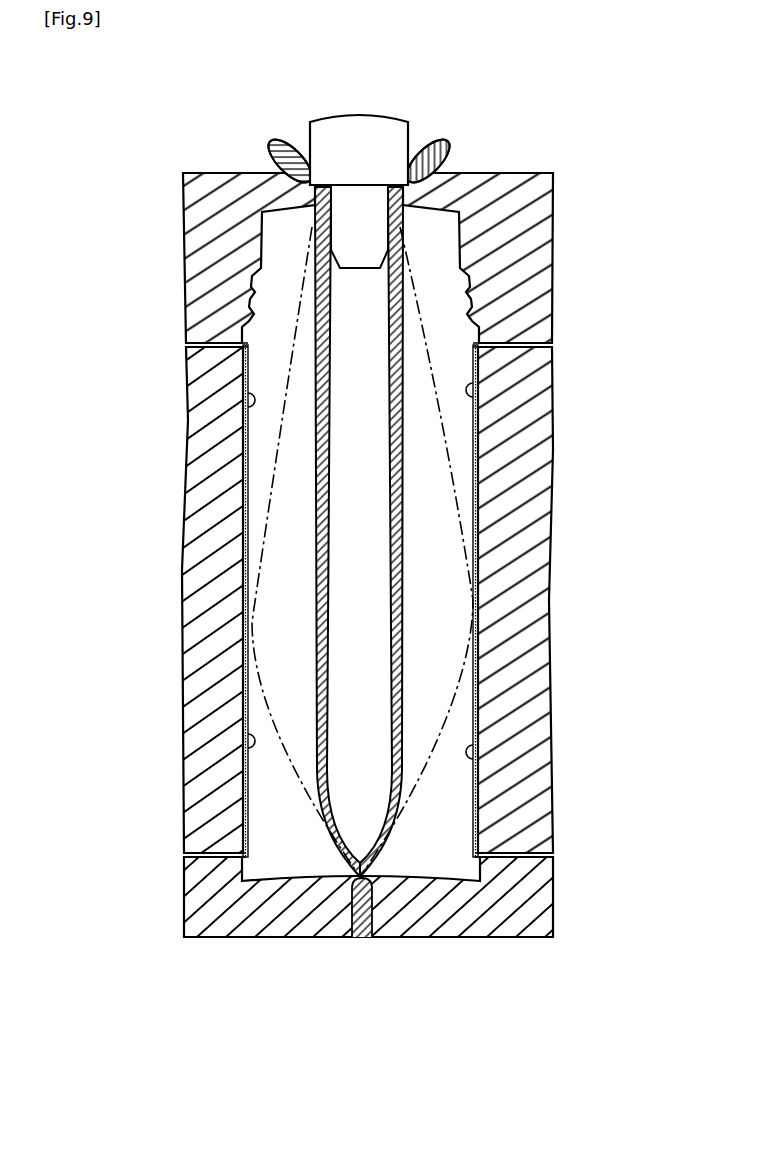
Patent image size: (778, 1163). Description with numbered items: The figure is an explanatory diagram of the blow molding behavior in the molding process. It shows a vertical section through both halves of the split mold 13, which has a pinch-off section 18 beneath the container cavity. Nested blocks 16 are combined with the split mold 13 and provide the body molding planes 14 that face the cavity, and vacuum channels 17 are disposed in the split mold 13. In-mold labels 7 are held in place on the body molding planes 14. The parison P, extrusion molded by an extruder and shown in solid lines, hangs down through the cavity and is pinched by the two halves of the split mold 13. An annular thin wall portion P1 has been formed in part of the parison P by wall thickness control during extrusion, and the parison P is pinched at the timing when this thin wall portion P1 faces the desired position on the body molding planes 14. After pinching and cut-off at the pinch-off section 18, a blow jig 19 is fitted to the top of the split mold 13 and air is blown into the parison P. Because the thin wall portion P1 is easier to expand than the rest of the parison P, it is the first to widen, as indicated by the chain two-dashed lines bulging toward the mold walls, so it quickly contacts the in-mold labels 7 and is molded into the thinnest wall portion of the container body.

The in-mold label 7 is at (245, 398).
The split mold 13 is at (387, 564).
The body molding plane 14 is at (243, 752).
The nested block 16 is at (198, 560).
The vacuum channel 17 is at (210, 340).
The pinch-off section 18 is at (356, 880).
The blow jig 19 is at (363, 132).
The parison P is at (400, 470).
The thin wall portion P1 is at (400, 608).